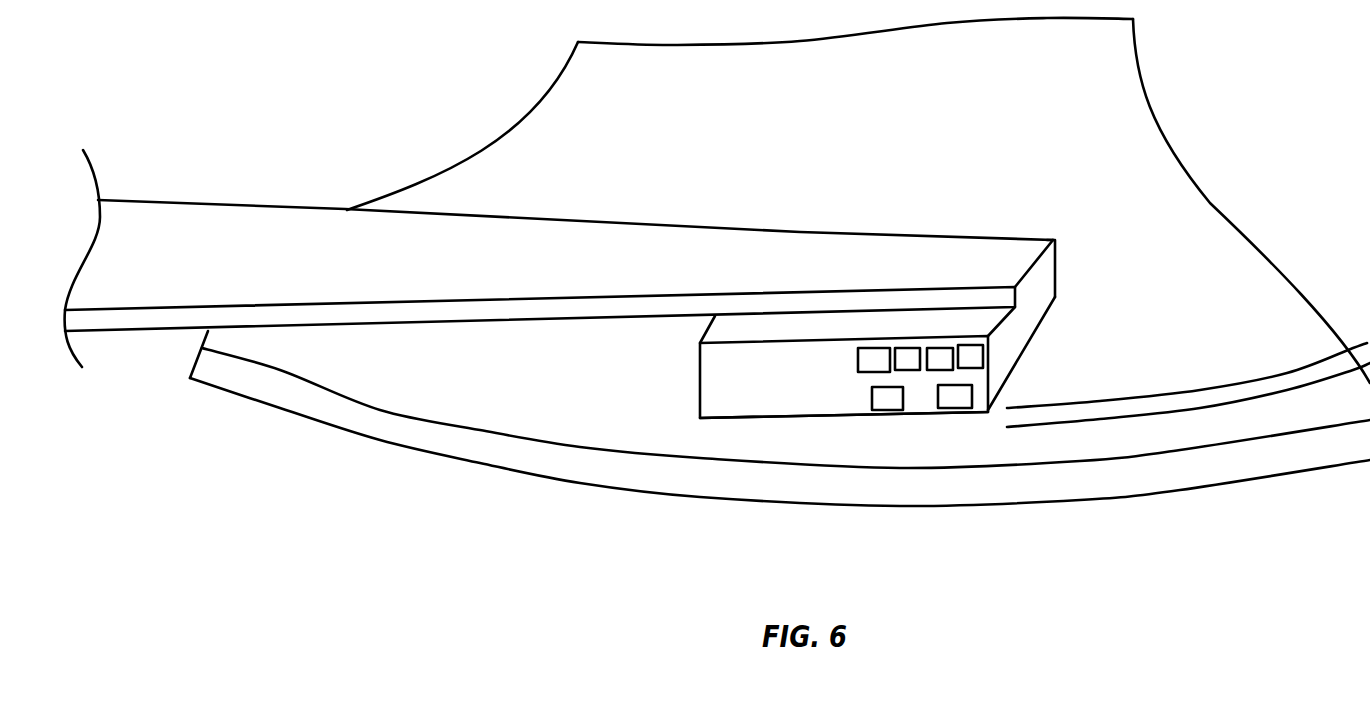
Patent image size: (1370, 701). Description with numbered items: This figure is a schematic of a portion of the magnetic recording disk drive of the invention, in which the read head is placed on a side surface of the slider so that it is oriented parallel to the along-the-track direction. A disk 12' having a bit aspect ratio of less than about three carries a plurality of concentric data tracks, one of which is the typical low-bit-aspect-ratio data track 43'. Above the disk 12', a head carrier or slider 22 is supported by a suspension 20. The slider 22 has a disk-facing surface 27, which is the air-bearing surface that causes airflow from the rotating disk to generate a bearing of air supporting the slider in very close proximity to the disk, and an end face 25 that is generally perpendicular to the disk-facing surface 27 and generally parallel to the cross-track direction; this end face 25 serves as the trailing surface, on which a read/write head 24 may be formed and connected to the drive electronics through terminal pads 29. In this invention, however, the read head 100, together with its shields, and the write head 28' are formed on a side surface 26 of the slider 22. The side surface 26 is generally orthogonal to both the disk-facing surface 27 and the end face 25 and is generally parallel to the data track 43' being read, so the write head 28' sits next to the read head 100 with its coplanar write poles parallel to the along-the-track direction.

The disk 12' is at (858, 200).
The suspension 20 is at (655, 238).
The slider 22 is at (1046, 240).
The read/write head 24 is at (973, 420).
The end face 25 is at (1035, 313).
The side surface 26 is at (712, 400).
The disk-facing surface 27 is at (733, 421).
The write head 28' is at (849, 386).
The terminal pads 29 is at (967, 348).
The data track 43' is at (780, 417).
The read head 100 is at (970, 393).